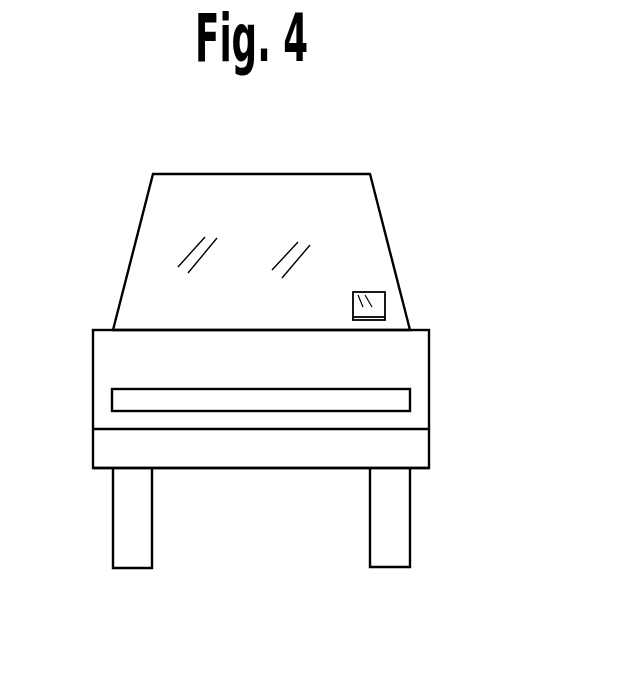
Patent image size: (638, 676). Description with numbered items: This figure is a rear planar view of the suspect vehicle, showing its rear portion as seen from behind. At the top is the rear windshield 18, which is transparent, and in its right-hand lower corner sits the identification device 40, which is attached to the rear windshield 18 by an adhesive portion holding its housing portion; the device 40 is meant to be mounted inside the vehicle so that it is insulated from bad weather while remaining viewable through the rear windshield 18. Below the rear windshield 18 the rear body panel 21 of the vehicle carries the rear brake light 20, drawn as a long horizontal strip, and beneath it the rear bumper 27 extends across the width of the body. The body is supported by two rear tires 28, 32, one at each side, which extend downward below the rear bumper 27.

The rear windshield 18 is at (277, 198).
The identification device 40 is at (383, 298).
The main body 21 is at (217, 372).
The rear bumper 27 is at (165, 462).
The rear brake light 20 is at (333, 399).
The rear tire 28 is at (132, 557).
The rear tire 32 is at (388, 553).